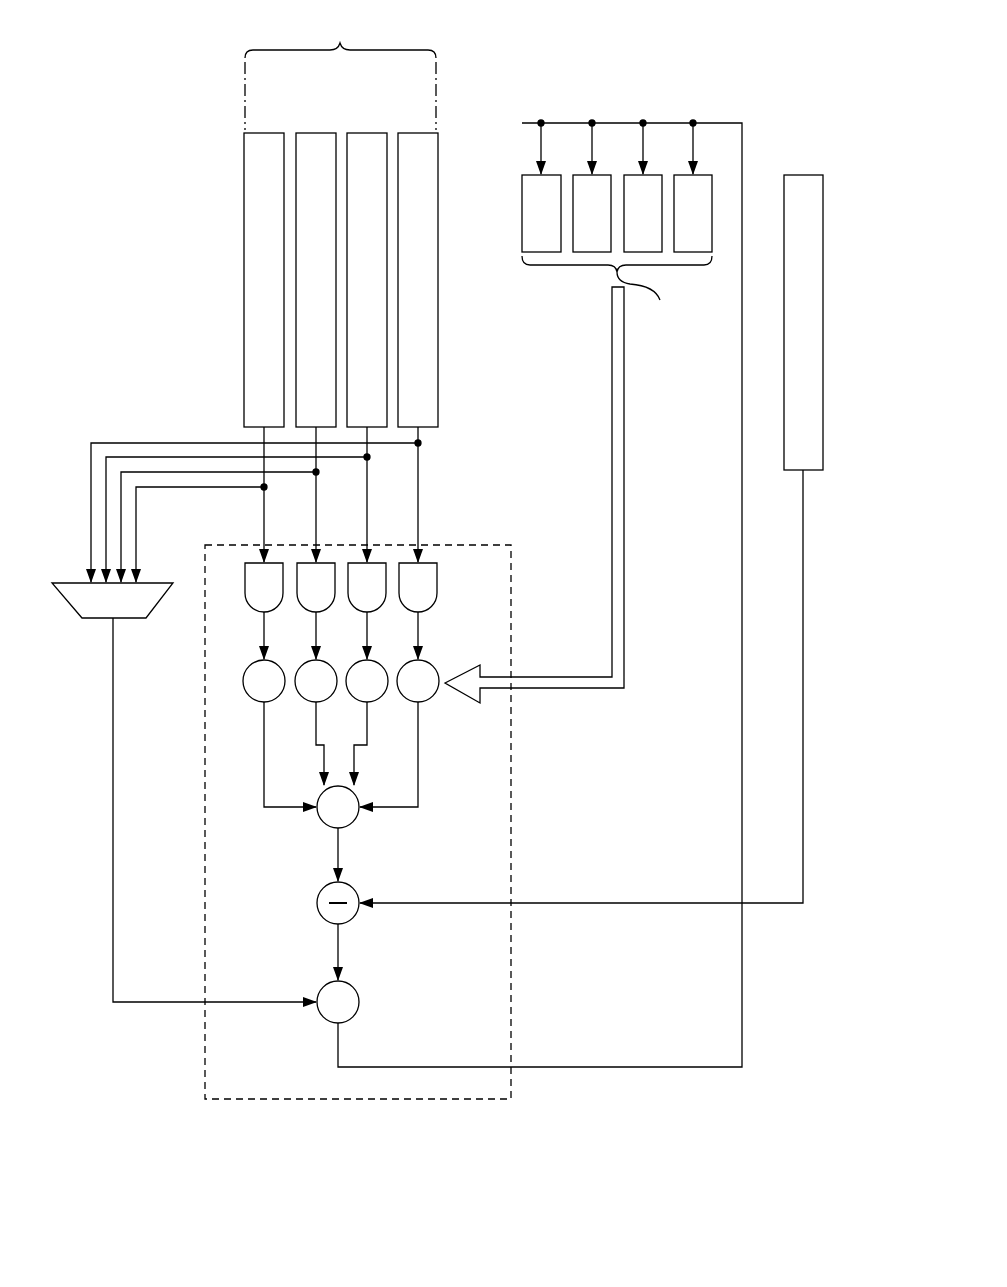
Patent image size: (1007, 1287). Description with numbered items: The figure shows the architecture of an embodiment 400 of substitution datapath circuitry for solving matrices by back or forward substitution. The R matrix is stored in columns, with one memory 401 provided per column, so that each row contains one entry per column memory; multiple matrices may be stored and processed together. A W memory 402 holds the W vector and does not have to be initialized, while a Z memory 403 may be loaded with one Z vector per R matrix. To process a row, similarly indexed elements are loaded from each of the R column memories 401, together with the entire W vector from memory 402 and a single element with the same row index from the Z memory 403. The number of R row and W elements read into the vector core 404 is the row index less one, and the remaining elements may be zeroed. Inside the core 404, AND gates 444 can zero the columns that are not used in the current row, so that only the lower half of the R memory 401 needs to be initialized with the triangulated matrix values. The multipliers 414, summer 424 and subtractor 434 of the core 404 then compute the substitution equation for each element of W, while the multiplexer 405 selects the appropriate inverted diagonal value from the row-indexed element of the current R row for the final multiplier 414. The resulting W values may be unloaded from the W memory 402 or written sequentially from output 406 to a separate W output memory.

The substitution datapath/circuitry embodiment 400 is at (127, 44).
The R column memory 401 is at (316, 133).
The W memory 402 is at (584, 281).
The Z memory 403 is at (806, 176).
The vector core 404 is at (452, 545).
The multiplexer 405 is at (90, 618).
The output 406 is at (592, 1068).
The multiplier 414 is at (299, 697).
The summer 424 is at (357, 822).
The subtractor 434 is at (357, 918).
The AND gate 444 is at (310, 563).